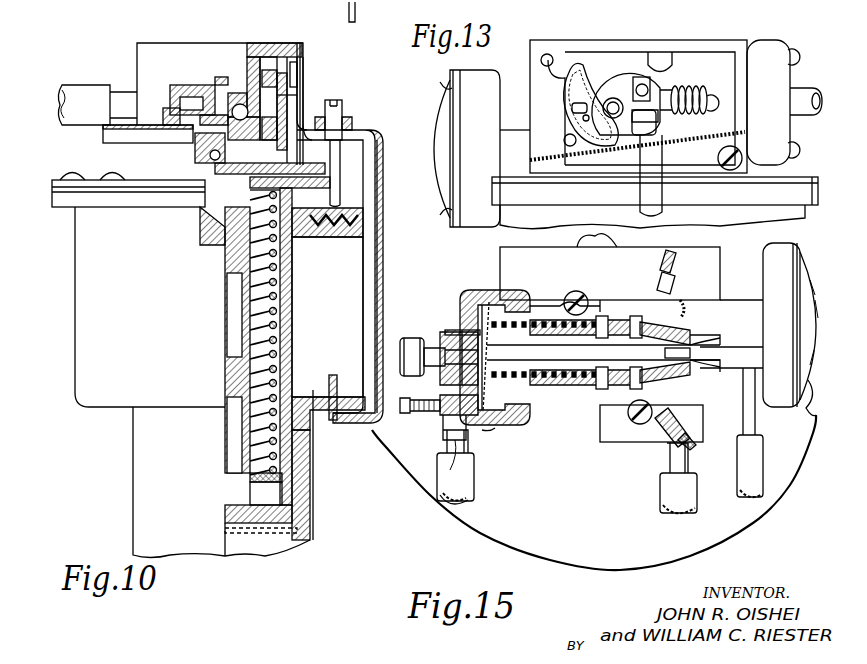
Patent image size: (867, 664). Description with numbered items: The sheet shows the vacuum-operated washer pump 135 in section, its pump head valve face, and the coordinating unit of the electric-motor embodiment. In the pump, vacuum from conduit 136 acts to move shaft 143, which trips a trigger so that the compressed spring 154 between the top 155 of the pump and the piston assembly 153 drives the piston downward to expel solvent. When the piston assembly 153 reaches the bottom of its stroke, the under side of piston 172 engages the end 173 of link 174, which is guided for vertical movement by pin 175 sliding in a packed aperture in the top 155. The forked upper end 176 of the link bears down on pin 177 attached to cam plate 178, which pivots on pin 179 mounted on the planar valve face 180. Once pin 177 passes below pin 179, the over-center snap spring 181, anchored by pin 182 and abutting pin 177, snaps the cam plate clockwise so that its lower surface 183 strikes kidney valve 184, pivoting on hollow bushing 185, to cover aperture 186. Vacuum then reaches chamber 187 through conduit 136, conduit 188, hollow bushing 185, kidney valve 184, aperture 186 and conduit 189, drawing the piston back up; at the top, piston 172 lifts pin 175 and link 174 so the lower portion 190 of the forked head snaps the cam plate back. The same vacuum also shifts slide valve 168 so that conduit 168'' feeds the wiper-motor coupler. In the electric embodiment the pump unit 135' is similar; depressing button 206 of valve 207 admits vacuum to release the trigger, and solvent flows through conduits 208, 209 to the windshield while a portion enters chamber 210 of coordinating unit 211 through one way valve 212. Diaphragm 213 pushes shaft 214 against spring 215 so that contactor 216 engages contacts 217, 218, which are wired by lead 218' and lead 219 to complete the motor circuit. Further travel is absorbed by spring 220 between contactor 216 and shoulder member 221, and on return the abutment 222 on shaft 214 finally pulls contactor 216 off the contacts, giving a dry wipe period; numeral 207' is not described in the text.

In FIG. 10, the washer pump 135 is at (190, 382).
In FIG. 13, the washer pump 135 is at (467, 170).
In FIG. 15, the pump unit 135' is at (594, 475).
In FIG. 10, the conduit 136 is at (130, 150).
In FIG. 10, the shaft 143 is at (205, 170).
In FIG. 10, the piston assembly 153 is at (293, 315).
In FIG. 10, the spring 154 is at (276, 338).
In FIG. 10, the top 155 is at (90, 180).
In FIG. 10, the slide valve 168 is at (192, 83).
In FIG. 10, the conduit 168'' is at (97, 81).
In FIG. 10, the piston 172 is at (312, 238).
In FIG. 10, the end of link 173 is at (332, 376).
In FIG. 10, the link 174 is at (385, 277).
In FIG. 13, the link 174 is at (652, 205).
In FIG. 15, the link 174 is at (759, 325).
In FIG. 10, the pin 175 is at (341, 158).
In FIG. 10, the forked upper end 176 is at (300, 78).
In FIG. 13, the forked upper end 176 is at (650, 85).
In FIG. 10, the pin 177 is at (290, 97).
In FIG. 13, the pin 177 is at (638, 98).
In FIG. 13, the cam plate 178 is at (610, 67).
In FIG. 13, the pin 179 is at (628, 137).
In FIG. 10, the planar valve face 180 is at (242, 110).
In FIG. 13, the planar valve face 180 is at (552, 88).
In FIG. 13, the over-center snap spring 181 is at (695, 87).
In FIG. 13, the pin 182 is at (707, 122).
In FIG. 13, the lower surface 183 is at (603, 150).
In FIG. 10, the kidney valve 184 is at (290, 131).
In FIG. 13, the kidney valve 184 is at (572, 110).
In FIG. 10, the hollow bushing 185 is at (243, 100).
In FIG. 13, the hollow bushing 185 is at (572, 113).
In FIG. 10, the aperture 186 is at (272, 142).
In FIG. 13, the aperture 186 is at (568, 146).
In FIG. 10, the chamber 187 is at (302, 212).
In FIG. 10, the conduit 188 is at (182, 148).
In FIG. 10, the conduit 189 is at (202, 220).
In FIG. 13, the lower portion of forked head 190 is at (650, 163).
In FIG. 10, the button 206 is at (362, 6).
In FIG. 10, the valve 207 is at (333, 12).
In FIG. 10, the part 207' is at (206, 12).
In FIG. 15, the conduit 208 is at (435, 477).
In FIG. 15, the conduit 209 is at (414, 338).
In FIG. 15, the chamber 210 is at (478, 432).
In FIG. 15, the coordinating unit 211 is at (508, 292).
In FIG. 15, the one way valve 212 is at (458, 335).
In FIG. 15, the diaphragm 213 is at (495, 325).
In FIG. 15, the shaft 214 is at (598, 359).
In FIG. 15, the spring 215 is at (496, 378).
In FIG. 15, the contactor 216 is at (600, 318).
In FIG. 15, the contact 217 is at (650, 385).
In FIG. 15, the contact 218 is at (674, 341).
In FIG. 15, the lead 218' is at (695, 460).
In FIG. 15, the lead 219 is at (676, 278).
In FIG. 15, the spring 220 is at (603, 318).
In FIG. 15, the shoulder member 221 is at (537, 430).
In FIG. 15, the abutment 222 is at (692, 360).